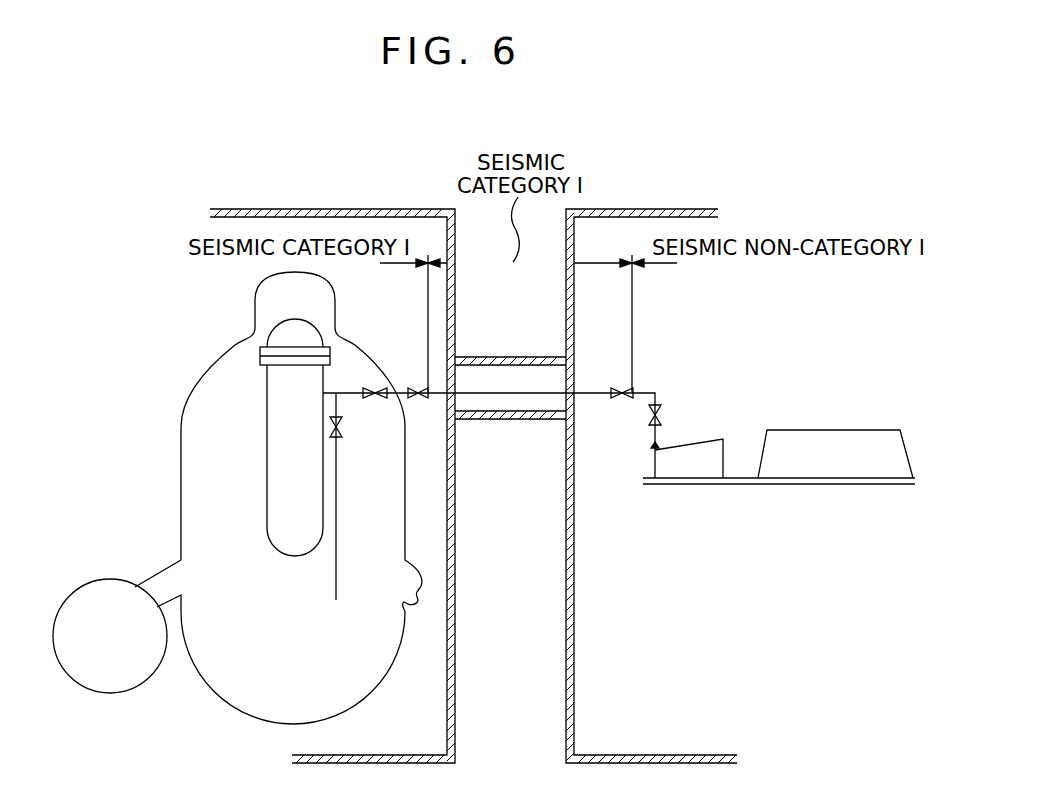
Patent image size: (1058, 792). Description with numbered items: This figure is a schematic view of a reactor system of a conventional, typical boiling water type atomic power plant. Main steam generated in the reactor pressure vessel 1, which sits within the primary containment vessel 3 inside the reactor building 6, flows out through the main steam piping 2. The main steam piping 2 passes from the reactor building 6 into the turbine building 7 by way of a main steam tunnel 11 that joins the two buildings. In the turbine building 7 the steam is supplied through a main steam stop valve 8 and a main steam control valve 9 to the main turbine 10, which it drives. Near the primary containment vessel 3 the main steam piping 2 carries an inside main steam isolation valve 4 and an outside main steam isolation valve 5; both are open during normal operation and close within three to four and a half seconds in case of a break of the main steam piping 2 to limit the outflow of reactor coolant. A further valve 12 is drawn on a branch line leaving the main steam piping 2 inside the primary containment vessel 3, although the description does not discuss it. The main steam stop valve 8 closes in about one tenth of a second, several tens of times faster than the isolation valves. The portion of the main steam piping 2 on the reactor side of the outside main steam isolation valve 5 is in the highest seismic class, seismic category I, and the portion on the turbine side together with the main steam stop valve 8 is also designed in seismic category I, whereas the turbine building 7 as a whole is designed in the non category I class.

The reactor pressure vessel 1 is at (292, 329).
The main steam piping 2 is at (503, 392).
The primary containment vessel 3 is at (255, 298).
The inside main steam isolation valve 4 is at (373, 390).
The outside main steam isolation valve 5 is at (415, 389).
The reactor building 6 is at (455, 580).
The turbine building 7 is at (574, 297).
The main steam stop valve 8 is at (620, 390).
The main steam control valve 9 is at (662, 410).
The main turbine 10 is at (710, 446).
The main steam tunnel 11 is at (502, 419).
The valve 12 is at (344, 424).